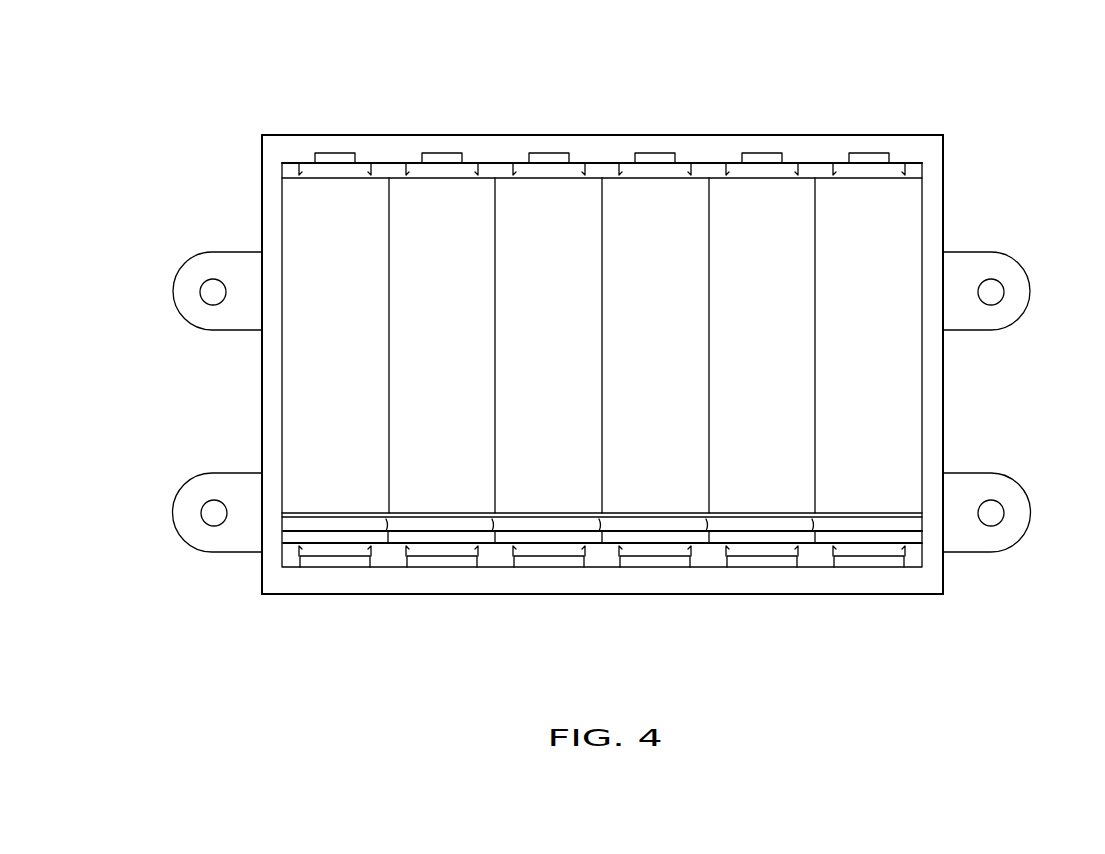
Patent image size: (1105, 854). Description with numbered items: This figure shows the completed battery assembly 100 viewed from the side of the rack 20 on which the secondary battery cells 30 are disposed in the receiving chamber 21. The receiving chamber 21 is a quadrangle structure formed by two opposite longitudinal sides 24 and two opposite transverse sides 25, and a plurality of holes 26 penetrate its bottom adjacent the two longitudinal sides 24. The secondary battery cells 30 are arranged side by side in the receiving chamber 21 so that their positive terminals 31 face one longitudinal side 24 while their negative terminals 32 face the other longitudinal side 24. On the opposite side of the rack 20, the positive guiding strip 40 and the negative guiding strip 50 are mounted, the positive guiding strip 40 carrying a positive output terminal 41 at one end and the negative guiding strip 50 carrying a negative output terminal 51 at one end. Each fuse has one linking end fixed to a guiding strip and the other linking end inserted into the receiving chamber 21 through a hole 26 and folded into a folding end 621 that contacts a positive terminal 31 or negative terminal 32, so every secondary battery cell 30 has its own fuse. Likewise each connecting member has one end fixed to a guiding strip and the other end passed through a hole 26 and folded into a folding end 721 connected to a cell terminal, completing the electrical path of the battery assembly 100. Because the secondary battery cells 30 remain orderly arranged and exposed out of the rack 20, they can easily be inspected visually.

The battery assembly 100 is at (990, 110).
The rack 20 is at (943, 196).
The receiving chamber 21 is at (812, 170).
The longitudinal sides 24 is at (666, 134).
The transverse sides 25 is at (261, 410).
The holes 26 is at (392, 163).
The secondary battery cells 30 is at (482, 197).
The positive terminals 31 is at (458, 553).
The negative terminals 32 is at (445, 177).
The positive guiding strip 40 is at (577, 540).
The positive output terminal 41 is at (193, 495).
The negative guiding strip 50 is at (565, 259).
The negative output terminal 51 is at (182, 277).
The folding end 621 is at (418, 168).
The folding end 721 is at (427, 553).